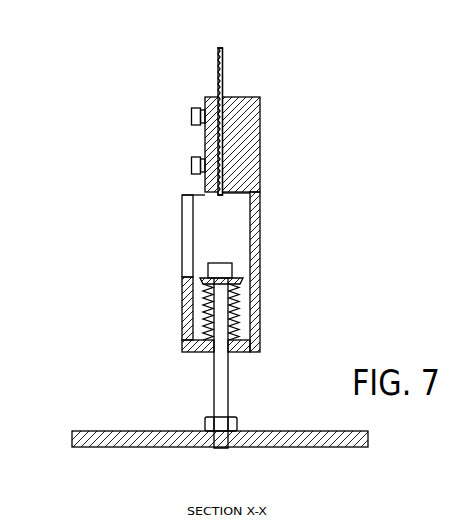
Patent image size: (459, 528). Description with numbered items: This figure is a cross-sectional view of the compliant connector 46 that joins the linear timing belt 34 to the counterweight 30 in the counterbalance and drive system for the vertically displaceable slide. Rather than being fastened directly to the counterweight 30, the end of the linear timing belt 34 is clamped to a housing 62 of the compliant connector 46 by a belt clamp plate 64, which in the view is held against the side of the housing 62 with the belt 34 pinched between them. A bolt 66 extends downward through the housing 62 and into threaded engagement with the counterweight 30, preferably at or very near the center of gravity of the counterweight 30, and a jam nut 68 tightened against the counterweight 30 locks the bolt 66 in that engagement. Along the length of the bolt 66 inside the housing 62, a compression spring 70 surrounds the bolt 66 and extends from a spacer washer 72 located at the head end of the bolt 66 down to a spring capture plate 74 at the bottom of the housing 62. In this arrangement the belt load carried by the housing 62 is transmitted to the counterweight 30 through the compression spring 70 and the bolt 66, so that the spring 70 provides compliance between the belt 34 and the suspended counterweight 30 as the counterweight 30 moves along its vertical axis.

The counterweight 30 is at (76, 431).
The linear timing belt 34 is at (224, 58).
The compliant connector 46 is at (182, 278).
The housing 62 is at (260, 193).
The belt clamp plate 64 is at (192, 129).
The bolt 66 is at (214, 380).
The jam nut 68 is at (205, 421).
The compression spring 70 is at (240, 313).
The spacer washer 72 is at (252, 276).
The spring capture plate 74 is at (258, 352).